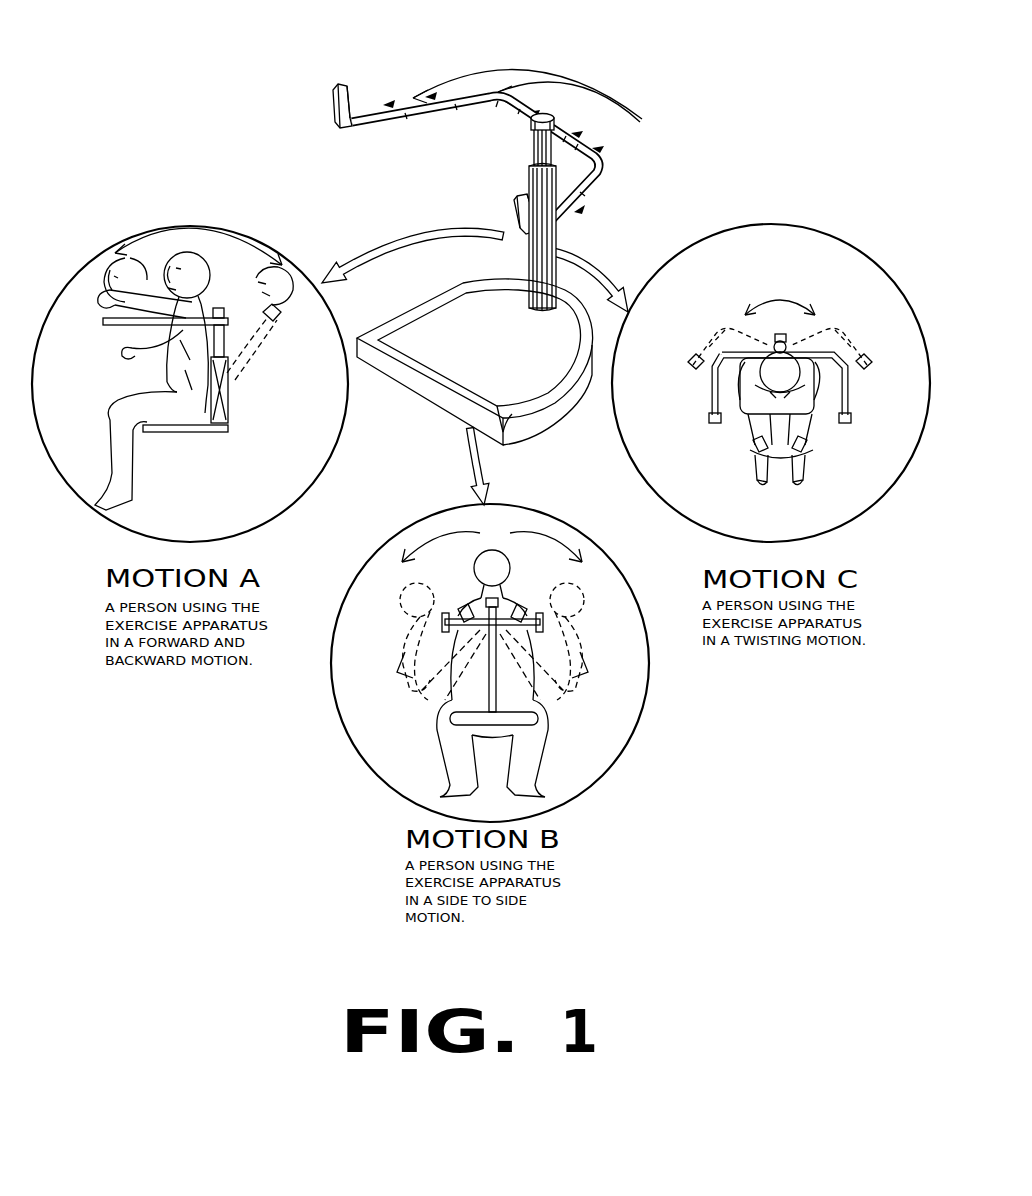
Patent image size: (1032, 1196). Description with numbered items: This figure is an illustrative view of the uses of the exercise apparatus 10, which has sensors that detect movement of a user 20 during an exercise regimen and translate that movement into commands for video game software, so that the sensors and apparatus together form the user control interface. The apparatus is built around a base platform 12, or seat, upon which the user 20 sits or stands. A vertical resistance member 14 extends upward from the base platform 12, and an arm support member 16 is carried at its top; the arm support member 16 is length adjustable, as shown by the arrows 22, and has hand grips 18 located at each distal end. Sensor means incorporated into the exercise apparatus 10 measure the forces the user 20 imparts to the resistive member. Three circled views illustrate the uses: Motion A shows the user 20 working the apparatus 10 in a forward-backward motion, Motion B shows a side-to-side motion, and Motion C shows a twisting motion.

The exercise apparatus 10 is at (512, 357).
The base platform 12 is at (413, 398).
The vertical resistance member 14 is at (530, 172).
The arm support member 16 is at (368, 112).
The hand grips 18 is at (340, 88).
The user 20 is at (190, 254).
The arrows 22 is at (595, 193).